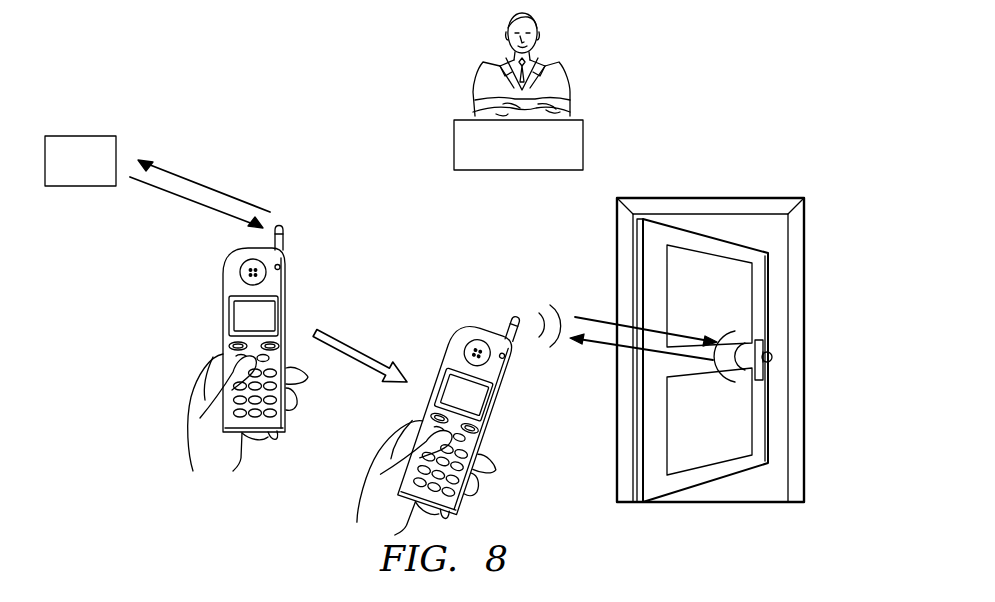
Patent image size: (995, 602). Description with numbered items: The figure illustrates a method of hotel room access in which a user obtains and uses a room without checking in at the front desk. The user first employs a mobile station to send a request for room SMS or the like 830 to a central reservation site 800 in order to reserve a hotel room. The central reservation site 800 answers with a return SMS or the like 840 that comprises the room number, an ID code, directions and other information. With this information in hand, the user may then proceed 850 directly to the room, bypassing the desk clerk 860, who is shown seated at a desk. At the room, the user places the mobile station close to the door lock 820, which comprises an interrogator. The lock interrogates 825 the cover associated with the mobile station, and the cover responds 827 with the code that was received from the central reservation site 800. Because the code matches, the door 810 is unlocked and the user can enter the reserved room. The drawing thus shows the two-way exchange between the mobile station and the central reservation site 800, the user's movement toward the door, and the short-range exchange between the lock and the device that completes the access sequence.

The central reservation site 800 is at (80, 136).
The door 810 is at (718, 194).
The door lock 820 is at (772, 356).
The lock interrogation 825 is at (600, 345).
The cover response 827 is at (687, 333).
The request for room SMS 830 is at (237, 198).
The return SMS 840 is at (166, 192).
The proceeding directly to room 850 is at (358, 350).
The desk clerk 860 is at (454, 145).